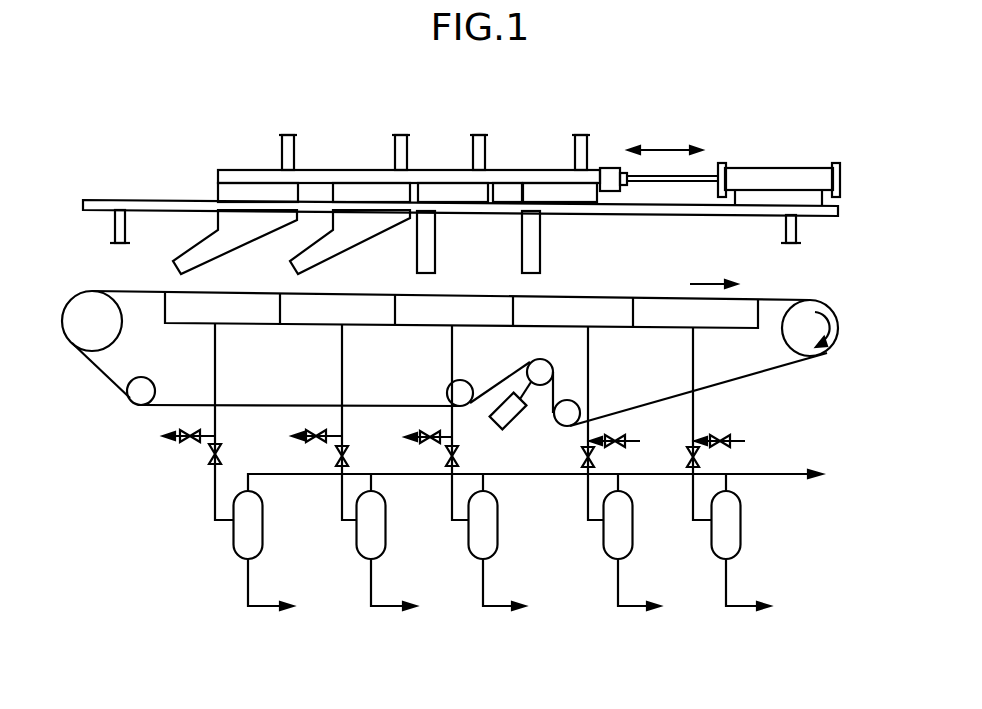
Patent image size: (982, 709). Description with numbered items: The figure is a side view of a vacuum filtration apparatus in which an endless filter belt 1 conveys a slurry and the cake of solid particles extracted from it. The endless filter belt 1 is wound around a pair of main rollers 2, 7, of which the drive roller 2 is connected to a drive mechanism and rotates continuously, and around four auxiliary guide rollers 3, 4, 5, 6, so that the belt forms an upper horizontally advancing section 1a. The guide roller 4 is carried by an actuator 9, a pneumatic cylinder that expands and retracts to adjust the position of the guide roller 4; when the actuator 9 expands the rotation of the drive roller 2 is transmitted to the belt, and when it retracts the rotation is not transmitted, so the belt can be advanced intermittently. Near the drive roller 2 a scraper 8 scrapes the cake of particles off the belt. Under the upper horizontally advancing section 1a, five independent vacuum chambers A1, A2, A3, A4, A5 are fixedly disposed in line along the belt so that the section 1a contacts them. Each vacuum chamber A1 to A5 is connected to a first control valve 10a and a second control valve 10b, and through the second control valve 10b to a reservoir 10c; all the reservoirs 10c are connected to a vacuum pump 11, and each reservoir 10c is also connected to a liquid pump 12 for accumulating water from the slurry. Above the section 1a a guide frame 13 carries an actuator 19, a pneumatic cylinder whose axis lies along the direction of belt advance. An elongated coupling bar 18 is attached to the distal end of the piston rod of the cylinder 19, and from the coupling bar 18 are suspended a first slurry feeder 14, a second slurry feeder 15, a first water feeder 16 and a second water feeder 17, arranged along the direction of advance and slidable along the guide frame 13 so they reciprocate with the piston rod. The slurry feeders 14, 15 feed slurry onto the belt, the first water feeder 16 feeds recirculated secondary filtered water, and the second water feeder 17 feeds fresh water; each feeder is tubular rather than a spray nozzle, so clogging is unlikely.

The endless filter belt 1 is at (786, 297).
The upper horizontally advancing section 1a is at (592, 297).
The drive roller 2 is at (815, 315).
The auxiliary guide roller 3 is at (580, 410).
The auxiliary guide roller 4 is at (548, 366).
The auxiliary guide roller 5 is at (448, 395).
The auxiliary guide roller 6 is at (130, 400).
The main roller 7 is at (87, 320).
The scraper 8 is at (845, 350).
The actuator 9 is at (520, 410).
The first control valve 10a is at (182, 437).
The second control valve 10b is at (203, 466).
The reservoir 10c is at (233, 538).
The vacuum pump 11 is at (555, 477).
The liquid pump 12 is at (527, 590).
The guide frame 13 is at (152, 199).
The first slurry feeder 14 is at (255, 188).
The second slurry feeder 15 is at (365, 190).
The first water feeder 16 is at (450, 193).
The second water feeder 17 is at (553, 195).
The coupling bar 18 is at (595, 178).
The actuator 19 is at (778, 182).
The vacuum chamber A1 is at (198, 327).
The vacuum chamber A2 is at (320, 327).
The vacuum chamber A3 is at (430, 328).
The vacuum chamber A4 is at (535, 328).
The vacuum chamber A5 is at (662, 328).